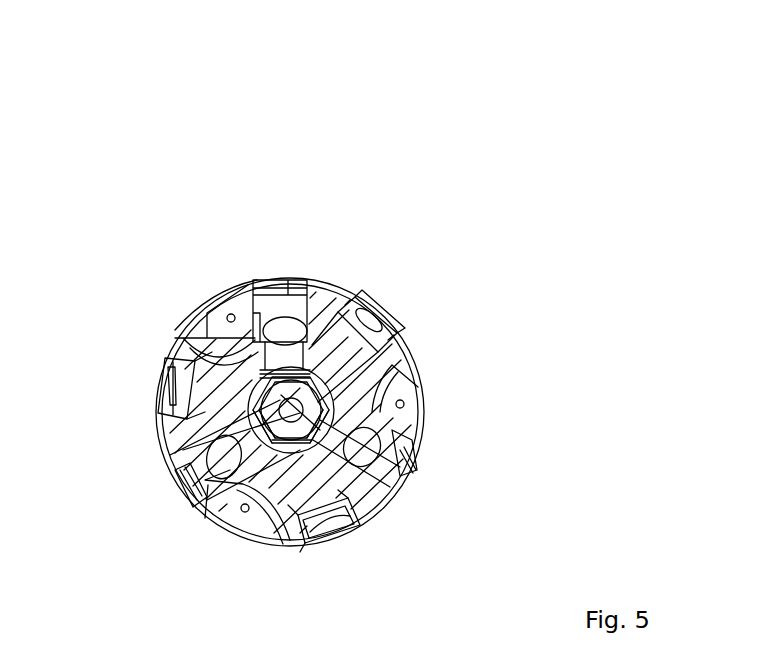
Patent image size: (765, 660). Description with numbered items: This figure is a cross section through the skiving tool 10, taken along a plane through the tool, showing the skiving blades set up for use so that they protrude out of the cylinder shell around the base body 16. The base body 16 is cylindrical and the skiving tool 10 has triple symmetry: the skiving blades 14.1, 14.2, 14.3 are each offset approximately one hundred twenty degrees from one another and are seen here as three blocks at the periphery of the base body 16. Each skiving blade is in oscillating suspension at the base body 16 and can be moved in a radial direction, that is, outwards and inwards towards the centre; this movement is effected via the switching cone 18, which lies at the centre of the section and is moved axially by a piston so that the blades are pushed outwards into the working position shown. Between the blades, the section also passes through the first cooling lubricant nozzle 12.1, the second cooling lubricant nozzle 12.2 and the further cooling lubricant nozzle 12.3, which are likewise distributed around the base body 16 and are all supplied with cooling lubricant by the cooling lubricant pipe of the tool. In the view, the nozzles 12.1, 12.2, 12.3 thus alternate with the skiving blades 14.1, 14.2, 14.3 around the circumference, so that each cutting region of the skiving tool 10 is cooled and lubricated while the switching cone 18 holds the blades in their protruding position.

The skiving tool 10 is at (531, 157).
The base body 16 is at (109, 268).
The switching cone 18 is at (322, 395).
The first cooling lubricant nozzle 12.1 is at (231, 314).
The second cooling lubricant nozzle 12.2 is at (243, 512).
The cooling lubricant nozzle 12.3 is at (404, 403).
The skiving blade 14.1 is at (163, 383).
The skiving blade 14.2 is at (331, 546).
The skiving blade 14.3 is at (358, 365).